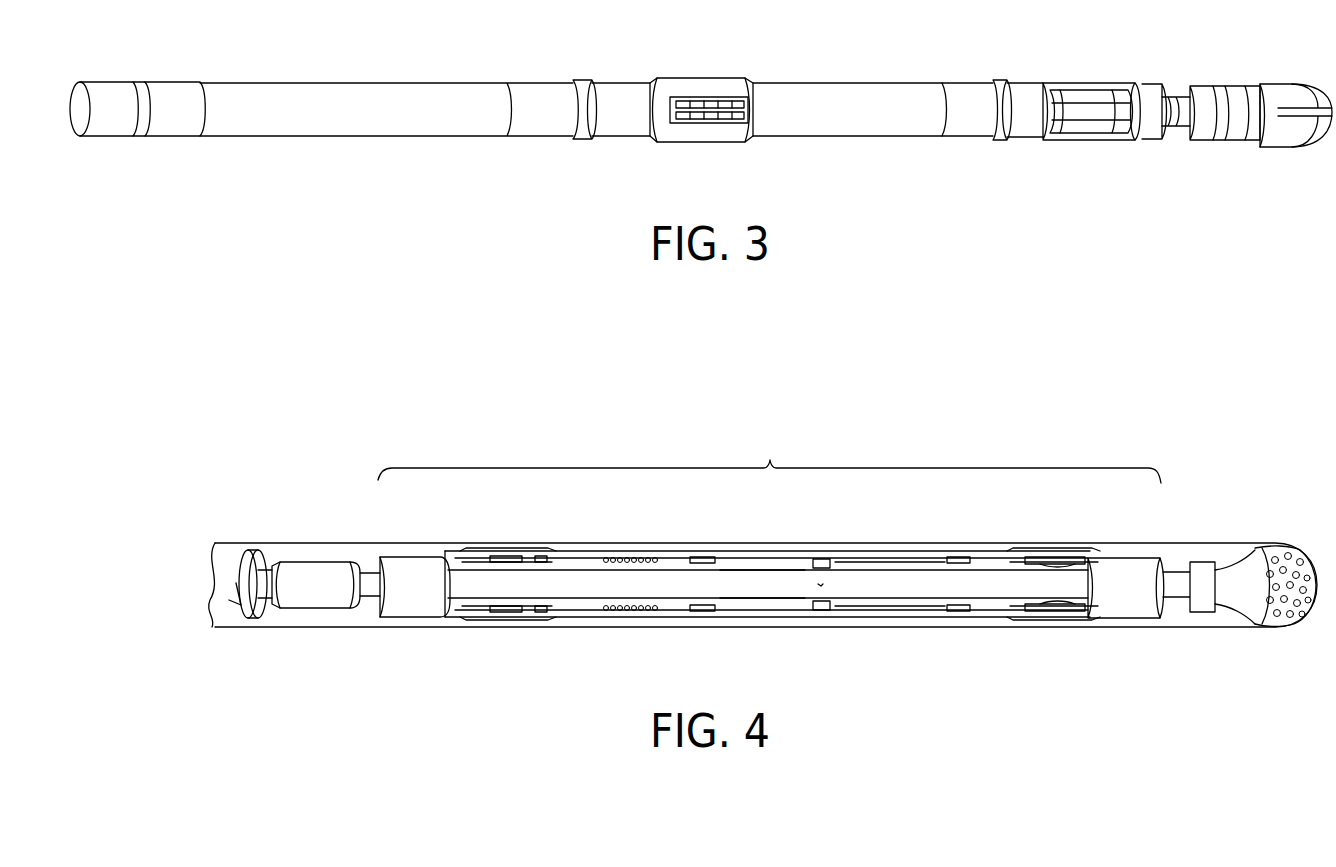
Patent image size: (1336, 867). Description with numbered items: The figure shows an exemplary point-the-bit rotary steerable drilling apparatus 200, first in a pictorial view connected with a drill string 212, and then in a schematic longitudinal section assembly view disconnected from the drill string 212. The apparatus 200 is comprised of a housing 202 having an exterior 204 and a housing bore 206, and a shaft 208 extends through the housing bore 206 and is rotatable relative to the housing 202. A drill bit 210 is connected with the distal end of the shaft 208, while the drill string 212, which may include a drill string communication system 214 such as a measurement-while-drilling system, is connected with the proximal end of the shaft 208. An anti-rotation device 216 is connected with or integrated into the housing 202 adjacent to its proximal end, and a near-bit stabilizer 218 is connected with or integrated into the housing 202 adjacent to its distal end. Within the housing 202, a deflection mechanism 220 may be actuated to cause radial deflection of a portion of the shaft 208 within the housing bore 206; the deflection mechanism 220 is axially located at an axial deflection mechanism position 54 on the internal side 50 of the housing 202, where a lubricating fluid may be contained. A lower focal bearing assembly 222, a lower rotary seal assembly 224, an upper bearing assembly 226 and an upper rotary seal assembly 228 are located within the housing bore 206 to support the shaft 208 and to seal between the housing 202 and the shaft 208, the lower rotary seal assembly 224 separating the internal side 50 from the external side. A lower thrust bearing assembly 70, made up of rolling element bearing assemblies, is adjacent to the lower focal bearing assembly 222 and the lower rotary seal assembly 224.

In FIG. 4, the internal side 50 is at (910, 568).
In FIG. 4, the axial deflection mechanism position 54 is at (817, 587).
In FIG. 4, the lower thrust bearing assembly 70 is at (1078, 633).
In FIG. 3, the point-the-bit rotary steerable drilling apparatus 200 is at (833, 130).
In FIG. 4, the point-the-bit rotary steerable drilling apparatus 200 is at (870, 457).
In FIG. 3, the housing 202 is at (888, 88).
In FIG. 4, the housing 202 is at (770, 462).
In FIG. 3, the exterior 204 is at (815, 82).
In FIG. 4, the exterior 204 is at (415, 620).
In FIG. 4, the housing bore 206 is at (858, 562).
In FIG. 3, the shaft 208 is at (1185, 127).
In FIG. 4, the shaft 208 is at (760, 580).
In FIG. 3, the drill bit 210 is at (1293, 132).
In FIG. 4, the drill bit 210 is at (1273, 630).
In FIG. 3, the drill string 212 is at (132, 135).
In FIG. 4, the drill string 212 is at (260, 590).
In FIG. 3, the drill string communication system 214 is at (358, 135).
In FIG. 3, the anti-rotation device 216 is at (697, 78).
In FIG. 4, the anti-rotation device 216 is at (478, 540).
In FIG. 3, the near-bit stabilizer 218 is at (1083, 80).
In FIG. 4, the near-bit stabilizer 218 is at (1058, 550).
In FIG. 4, the deflection mechanism 220 is at (828, 618).
In FIG. 4, the lower focal bearing assembly 222 is at (1055, 608).
In FIG. 4, the lower rotary seal assembly 224 is at (1067, 633).
In FIG. 4, the upper bearing assembly 226 is at (508, 560).
In FIG. 4, the upper rotary seal assembly 228 is at (395, 603).